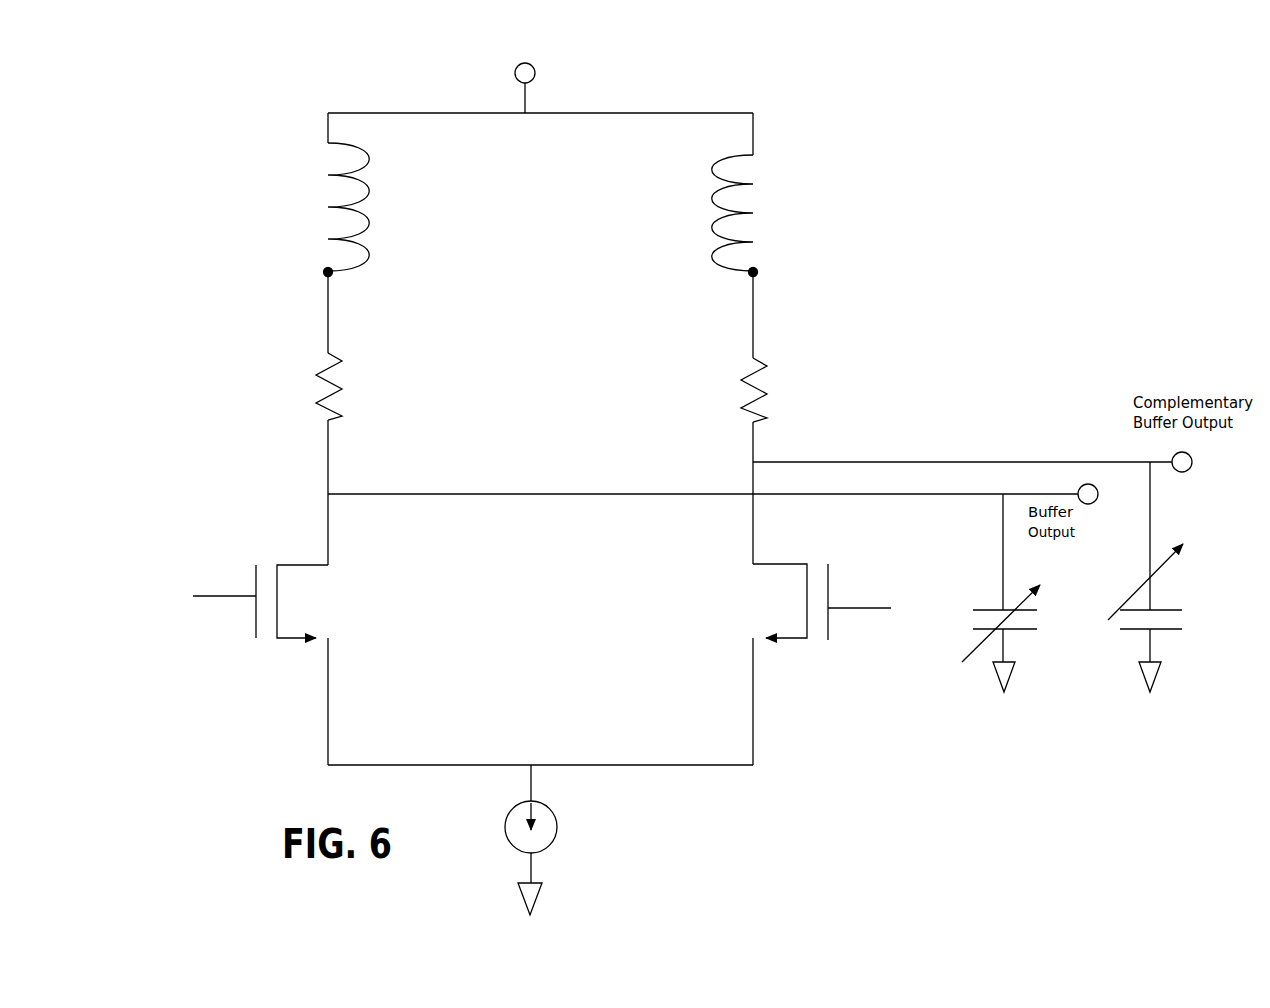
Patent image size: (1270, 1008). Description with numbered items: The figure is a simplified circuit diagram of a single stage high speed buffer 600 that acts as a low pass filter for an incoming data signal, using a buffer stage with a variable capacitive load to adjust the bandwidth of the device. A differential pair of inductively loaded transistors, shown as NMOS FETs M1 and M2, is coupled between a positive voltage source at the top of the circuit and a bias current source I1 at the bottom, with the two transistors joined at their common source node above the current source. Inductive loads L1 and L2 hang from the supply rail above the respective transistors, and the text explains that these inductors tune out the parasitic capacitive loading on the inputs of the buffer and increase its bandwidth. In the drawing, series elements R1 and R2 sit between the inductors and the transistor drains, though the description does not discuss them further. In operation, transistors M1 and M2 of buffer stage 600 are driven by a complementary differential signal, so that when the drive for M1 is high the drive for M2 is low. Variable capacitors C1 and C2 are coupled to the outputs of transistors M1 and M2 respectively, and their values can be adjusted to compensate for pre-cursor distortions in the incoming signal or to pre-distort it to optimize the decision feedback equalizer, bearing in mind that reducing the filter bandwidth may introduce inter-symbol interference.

The single stage high speed buffer 600 is at (654, 88).
The inductive load L1 is at (308, 233).
The inductive load L2 is at (764, 235).
The first resistor R1 is at (300, 459).
The second resistor R2 is at (779, 461).
The NMOS FET M1 is at (246, 657).
The NMOS FET M2 is at (846, 660).
The variable capacitor C1 is at (1020, 593).
The variable capacitor C2 is at (1172, 577).
The bias current source I1 is at (553, 840).